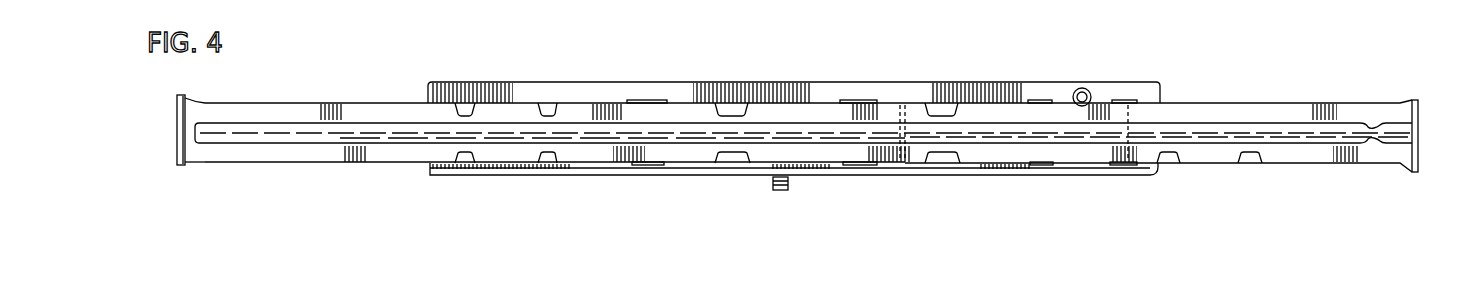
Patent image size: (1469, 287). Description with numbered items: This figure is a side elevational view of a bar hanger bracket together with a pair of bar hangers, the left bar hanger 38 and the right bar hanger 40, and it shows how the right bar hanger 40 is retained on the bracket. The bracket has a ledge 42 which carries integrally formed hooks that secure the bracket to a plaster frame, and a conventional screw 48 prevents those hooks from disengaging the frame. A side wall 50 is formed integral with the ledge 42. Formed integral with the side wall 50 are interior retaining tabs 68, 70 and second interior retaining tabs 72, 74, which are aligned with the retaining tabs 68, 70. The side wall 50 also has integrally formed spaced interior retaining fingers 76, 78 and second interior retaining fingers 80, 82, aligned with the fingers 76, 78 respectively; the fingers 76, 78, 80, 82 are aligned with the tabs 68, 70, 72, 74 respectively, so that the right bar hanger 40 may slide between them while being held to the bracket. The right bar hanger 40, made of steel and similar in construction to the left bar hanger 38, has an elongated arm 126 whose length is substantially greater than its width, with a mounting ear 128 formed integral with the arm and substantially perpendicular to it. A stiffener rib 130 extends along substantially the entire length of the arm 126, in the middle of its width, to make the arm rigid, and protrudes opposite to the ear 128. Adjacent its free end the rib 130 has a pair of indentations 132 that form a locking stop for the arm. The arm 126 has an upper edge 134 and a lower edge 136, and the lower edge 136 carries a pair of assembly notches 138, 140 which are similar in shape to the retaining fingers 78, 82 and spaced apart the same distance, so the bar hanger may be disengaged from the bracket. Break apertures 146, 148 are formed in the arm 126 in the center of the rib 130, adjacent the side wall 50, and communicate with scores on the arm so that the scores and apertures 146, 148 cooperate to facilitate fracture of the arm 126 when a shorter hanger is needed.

The left bar hanger 38 is at (1422, 128).
The right bar hanger 40 is at (272, 96).
The ledge 42 is at (1015, 177).
The screw 48 is at (790, 184).
The side wall 50 is at (1035, 85).
The interior retaining tab 68 is at (733, 108).
The interior retaining tab 70 is at (727, 155).
The second interior retaining tab 72 is at (942, 108).
The second interior retaining tab 74 is at (947, 158).
The interior retaining finger 76 is at (463, 107).
The interior retaining finger 78 is at (460, 157).
The second interior retaining finger 80 is at (548, 107).
The second interior retaining finger 82 is at (547, 157).
The elongated arm 126 is at (385, 107).
The mounting ear 128 is at (185, 167).
The stiffener rib 130 is at (278, 135).
The indentations 132 is at (1368, 125).
The upper edge 134 is at (1283, 112).
The lower edge 136 is at (1313, 157).
The assembly notch 138 is at (1168, 158).
The assembly notch 140 is at (1248, 158).
The break aperture 146 is at (903, 135).
The break aperture 148 is at (1128, 127).